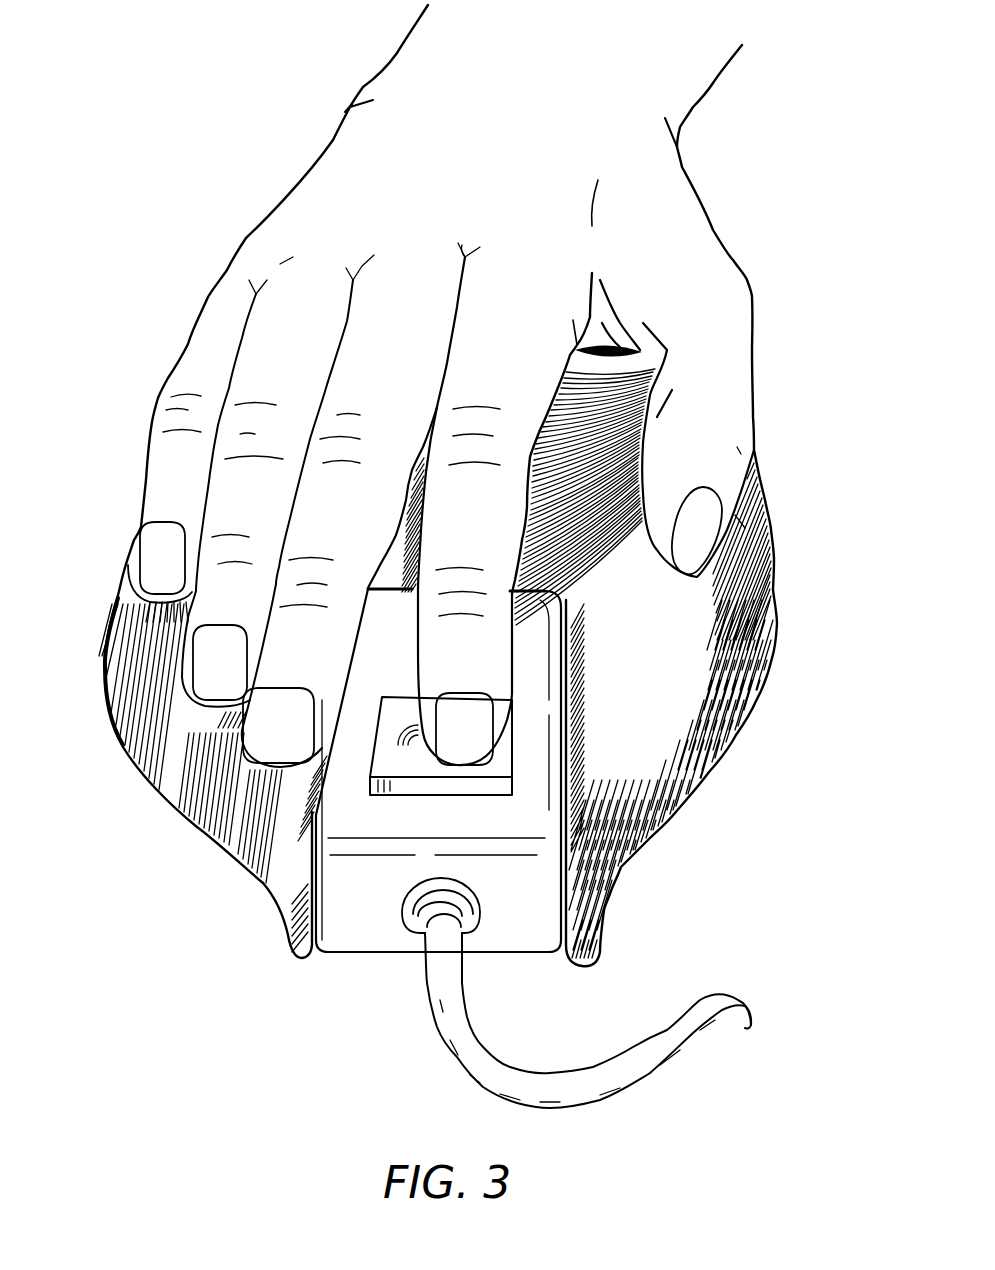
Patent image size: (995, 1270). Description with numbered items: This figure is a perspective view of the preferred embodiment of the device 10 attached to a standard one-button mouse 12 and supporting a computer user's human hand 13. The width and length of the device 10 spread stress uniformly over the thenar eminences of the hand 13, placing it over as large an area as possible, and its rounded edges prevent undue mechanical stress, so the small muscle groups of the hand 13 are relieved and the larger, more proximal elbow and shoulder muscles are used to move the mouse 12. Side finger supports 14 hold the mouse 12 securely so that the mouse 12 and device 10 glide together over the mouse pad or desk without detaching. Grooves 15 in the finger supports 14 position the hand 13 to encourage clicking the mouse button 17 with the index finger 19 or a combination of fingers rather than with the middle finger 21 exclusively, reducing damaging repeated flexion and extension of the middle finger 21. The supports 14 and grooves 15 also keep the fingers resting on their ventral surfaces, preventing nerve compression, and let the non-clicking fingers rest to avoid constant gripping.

The device 10 is at (766, 503).
The one-button mouse 12 is at (353, 930).
The human hand 13 is at (502, 191).
The side finger supports 14 is at (284, 813).
The grooves 15 is at (174, 630).
The mouse button 17 is at (415, 787).
The index finger 19 is at (459, 666).
The middle finger 21 is at (311, 670).